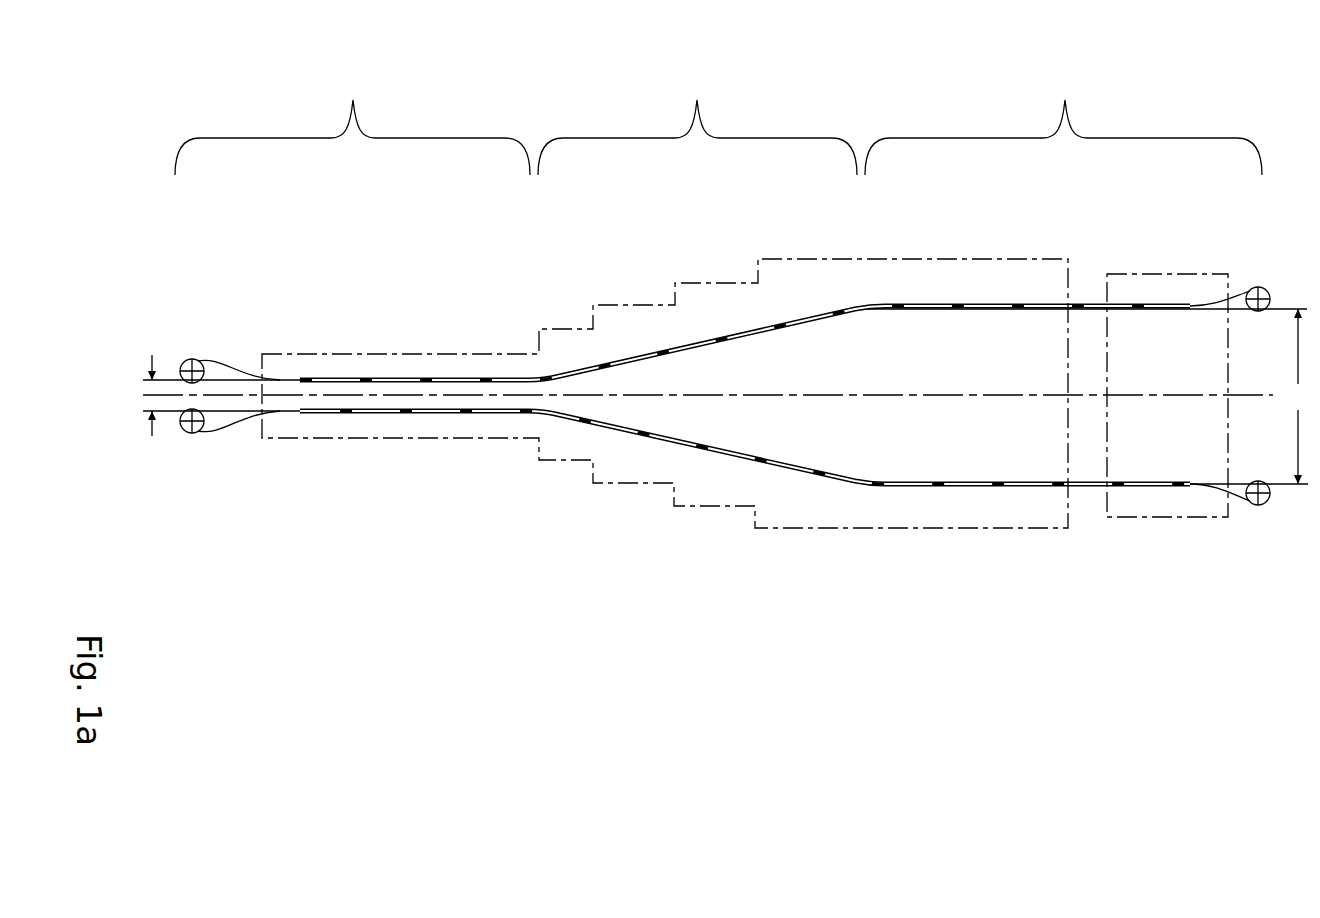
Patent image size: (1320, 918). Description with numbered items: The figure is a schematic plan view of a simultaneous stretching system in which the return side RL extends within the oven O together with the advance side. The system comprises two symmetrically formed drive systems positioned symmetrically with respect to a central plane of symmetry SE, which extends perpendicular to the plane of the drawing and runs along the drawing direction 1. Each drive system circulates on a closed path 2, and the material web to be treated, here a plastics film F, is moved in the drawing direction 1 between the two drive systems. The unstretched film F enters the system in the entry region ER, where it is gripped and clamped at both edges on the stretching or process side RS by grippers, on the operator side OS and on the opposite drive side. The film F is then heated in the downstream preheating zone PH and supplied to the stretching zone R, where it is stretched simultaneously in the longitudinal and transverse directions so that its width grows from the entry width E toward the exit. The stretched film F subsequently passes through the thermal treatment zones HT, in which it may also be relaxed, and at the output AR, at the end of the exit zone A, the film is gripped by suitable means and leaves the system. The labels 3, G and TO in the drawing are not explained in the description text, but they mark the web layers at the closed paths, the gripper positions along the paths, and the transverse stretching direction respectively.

The preheating zone PH is at (352, 121).
The stretching zone R is at (697, 121).
The thermal treatment zones HT is at (1063, 121).
The operator side OS is at (115, 393).
The closed paths 2 is at (947, 301).
The film layer 3 is at (707, 341).
The inlet width E is at (149, 395).
The exit zone A is at (1298, 396).
The entry region ER is at (192, 358).
The output AR is at (1258, 286).
The return side RL is at (393, 377).
The gripper G is at (530, 377).
The oven O is at (607, 486).
The plastics film F is at (1148, 338).
The stretching or process side RS is at (926, 313).
The plane of symmetry SE is at (1000, 394).
The transverse direction TO is at (787, 335).
The drawing direction 1 is at (1180, 395).